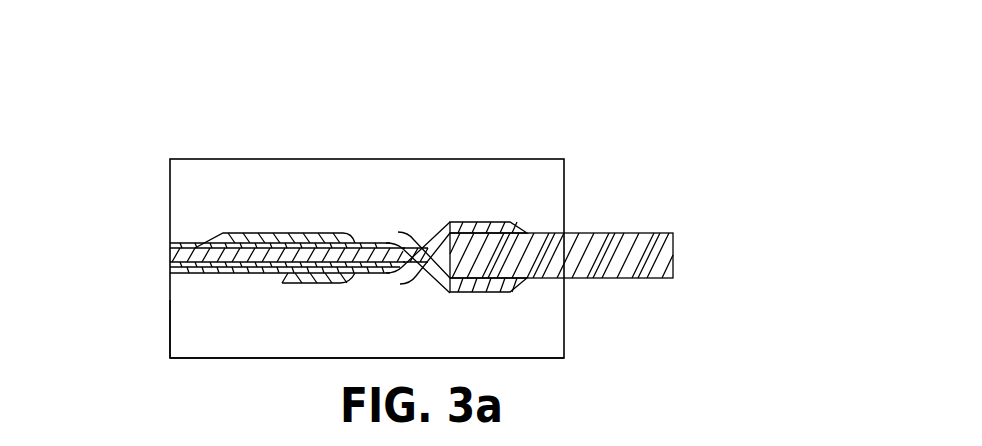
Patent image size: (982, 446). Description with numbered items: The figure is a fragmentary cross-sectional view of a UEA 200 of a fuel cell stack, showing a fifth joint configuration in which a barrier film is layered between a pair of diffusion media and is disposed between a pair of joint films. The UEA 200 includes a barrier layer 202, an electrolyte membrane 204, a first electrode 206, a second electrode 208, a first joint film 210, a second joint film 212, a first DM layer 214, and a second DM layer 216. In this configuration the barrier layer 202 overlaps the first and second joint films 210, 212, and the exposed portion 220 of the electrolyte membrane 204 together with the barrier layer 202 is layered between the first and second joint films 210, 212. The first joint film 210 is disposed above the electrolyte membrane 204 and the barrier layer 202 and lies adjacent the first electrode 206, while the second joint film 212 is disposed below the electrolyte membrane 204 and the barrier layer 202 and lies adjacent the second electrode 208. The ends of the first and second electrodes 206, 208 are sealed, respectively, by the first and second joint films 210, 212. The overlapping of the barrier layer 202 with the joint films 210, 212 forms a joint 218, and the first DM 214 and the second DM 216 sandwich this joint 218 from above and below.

The UEA 200 is at (664, 145).
The barrier layer 202 is at (627, 278).
The electrolyte membrane 204 is at (170, 262).
The first electrode 206 is at (170, 243).
The second electrode 208 is at (170, 290).
The first joint film 210 is at (477, 222).
The second joint film 212 is at (493, 285).
The first DM layer 214 is at (224, 159).
The second DM layer 216 is at (210, 358).
The joint 218 is at (428, 234).
The exposed portion 220 is at (372, 275).